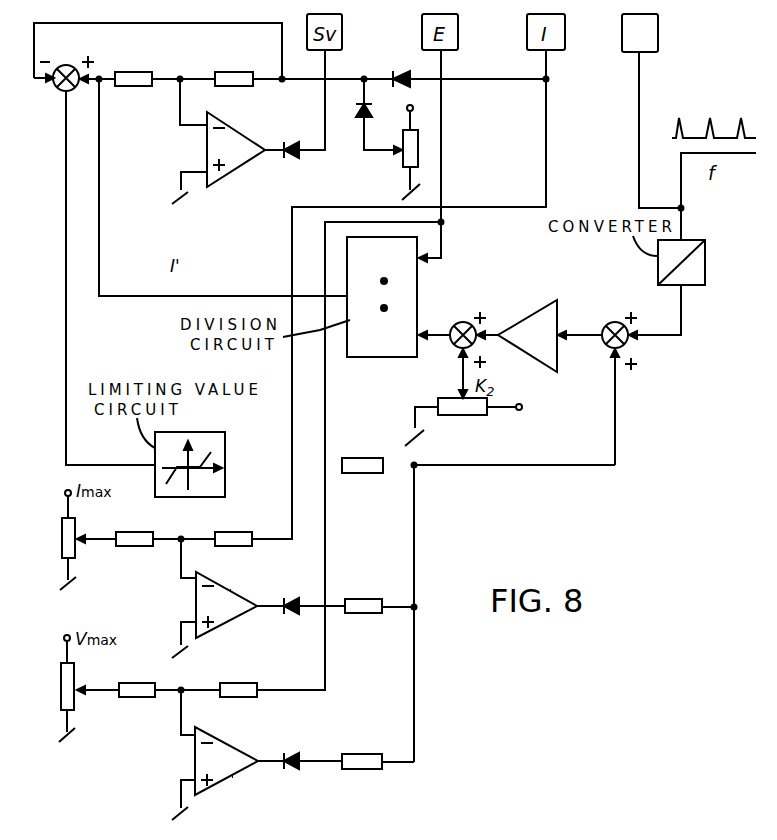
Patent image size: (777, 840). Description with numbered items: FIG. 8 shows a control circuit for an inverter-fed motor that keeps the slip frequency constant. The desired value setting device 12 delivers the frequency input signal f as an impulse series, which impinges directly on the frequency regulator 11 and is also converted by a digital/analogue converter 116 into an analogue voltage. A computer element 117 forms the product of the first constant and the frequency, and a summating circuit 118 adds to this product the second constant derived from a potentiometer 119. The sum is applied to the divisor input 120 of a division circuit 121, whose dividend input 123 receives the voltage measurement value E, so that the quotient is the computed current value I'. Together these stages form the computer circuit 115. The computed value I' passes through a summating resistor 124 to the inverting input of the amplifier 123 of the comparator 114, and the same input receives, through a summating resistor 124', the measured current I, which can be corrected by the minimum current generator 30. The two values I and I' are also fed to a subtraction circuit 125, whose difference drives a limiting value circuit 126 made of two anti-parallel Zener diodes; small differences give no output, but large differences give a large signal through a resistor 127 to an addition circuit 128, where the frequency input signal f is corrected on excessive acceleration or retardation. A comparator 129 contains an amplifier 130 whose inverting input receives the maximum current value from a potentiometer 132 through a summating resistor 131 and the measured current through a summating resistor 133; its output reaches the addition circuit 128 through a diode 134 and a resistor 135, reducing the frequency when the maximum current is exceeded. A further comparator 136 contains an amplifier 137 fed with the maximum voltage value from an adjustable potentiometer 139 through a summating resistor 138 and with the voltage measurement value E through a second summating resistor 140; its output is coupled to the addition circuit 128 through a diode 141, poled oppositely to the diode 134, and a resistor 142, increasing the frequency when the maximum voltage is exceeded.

The frequency regulator 11 is at (660, 38).
The desired value setting device 12 is at (741, 165).
The minimum current generator 30 is at (428, 152).
The comparator 114 is at (183, 147).
The computer circuit 115 is at (490, 290).
The digital/analogue converter 116 is at (706, 262).
The computer element 117 is at (559, 300).
The summating circuit 118 is at (458, 323).
The potentiometer 119 is at (477, 416).
The divisor input 120 is at (444, 347).
The division circuit 121 is at (384, 358).
The dividend input / amplifier 123 is at (246, 135).
The summating resistor 124 is at (133, 64).
The summating resistor 124' is at (234, 64).
The subtraction circuit 125 is at (62, 92).
The limiting value circuit 126 is at (226, 441).
The resistor 127 is at (365, 458).
The addition circuit 128 is at (607, 352).
The comparator 129 is at (186, 599).
The amplifier 130 is at (238, 595).
The summating resistor 131 is at (133, 532).
The potentiometer 132 is at (80, 548).
The summating resistor 133 is at (233, 532).
The diode 134 is at (291, 616).
The resistor 135 is at (366, 616).
The comparator 136 is at (182, 761).
The amplifier 137 is at (233, 778).
The summating resistor 138 is at (138, 700).
The adjustable potentiometer 139 is at (76, 681).
The second summating resistor 140 is at (237, 683).
The diode 141 is at (290, 752).
The resistor 142 is at (363, 754).